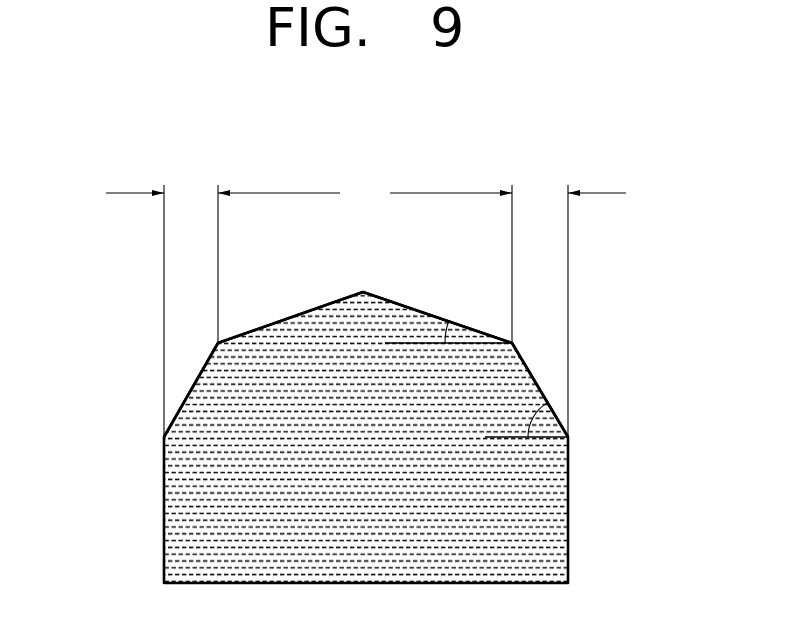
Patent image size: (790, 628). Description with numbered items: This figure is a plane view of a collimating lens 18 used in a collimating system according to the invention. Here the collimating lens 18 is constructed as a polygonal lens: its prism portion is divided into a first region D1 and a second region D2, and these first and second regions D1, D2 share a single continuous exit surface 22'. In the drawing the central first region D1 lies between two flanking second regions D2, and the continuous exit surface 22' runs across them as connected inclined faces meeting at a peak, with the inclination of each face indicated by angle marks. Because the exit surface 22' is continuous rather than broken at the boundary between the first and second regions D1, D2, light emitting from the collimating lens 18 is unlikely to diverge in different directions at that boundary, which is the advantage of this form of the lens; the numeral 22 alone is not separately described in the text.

The collimating lens 18 is at (622, 342).
The continuous exit surface 22' is at (338, 325).
The inclined surface 22 is at (540, 350).
The first region D1 is at (365, 261).
The second region D2 is at (366, 308).